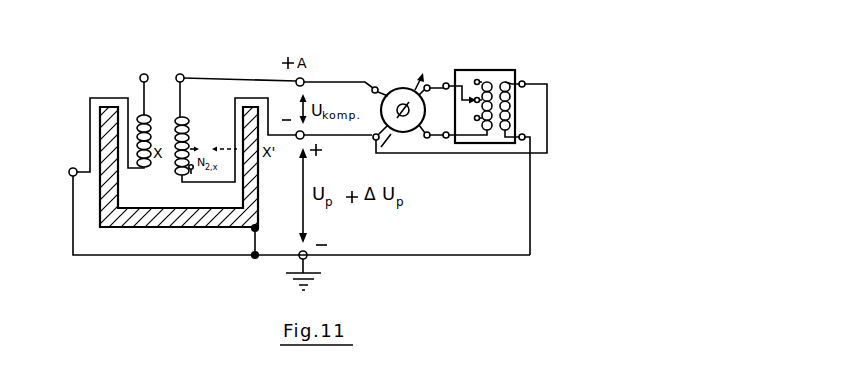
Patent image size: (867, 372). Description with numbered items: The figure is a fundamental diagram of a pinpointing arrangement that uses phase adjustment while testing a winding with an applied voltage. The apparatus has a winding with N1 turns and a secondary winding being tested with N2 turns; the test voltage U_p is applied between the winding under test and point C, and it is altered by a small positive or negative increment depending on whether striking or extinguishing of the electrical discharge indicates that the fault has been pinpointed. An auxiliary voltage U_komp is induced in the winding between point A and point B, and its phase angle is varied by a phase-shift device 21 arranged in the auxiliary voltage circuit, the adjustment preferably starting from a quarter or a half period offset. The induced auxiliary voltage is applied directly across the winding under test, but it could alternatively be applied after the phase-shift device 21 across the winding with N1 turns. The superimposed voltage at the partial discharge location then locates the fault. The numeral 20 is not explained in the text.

The potentiometer unit 20 is at (496, 81).
The phase-shift device 21 is at (393, 89).
The winding with N1 turns N1 is at (151, 120).
The secondary winding being tested N2 is at (188, 128).
The point A is at (180, 69).
The point B is at (296, 143).
The point C is at (297, 247).